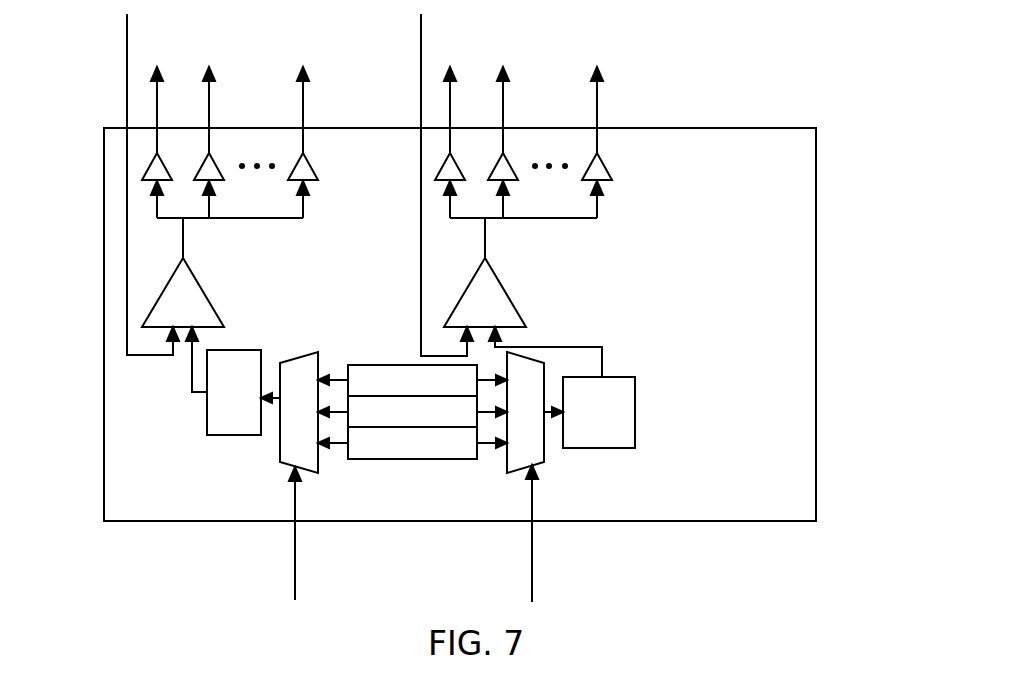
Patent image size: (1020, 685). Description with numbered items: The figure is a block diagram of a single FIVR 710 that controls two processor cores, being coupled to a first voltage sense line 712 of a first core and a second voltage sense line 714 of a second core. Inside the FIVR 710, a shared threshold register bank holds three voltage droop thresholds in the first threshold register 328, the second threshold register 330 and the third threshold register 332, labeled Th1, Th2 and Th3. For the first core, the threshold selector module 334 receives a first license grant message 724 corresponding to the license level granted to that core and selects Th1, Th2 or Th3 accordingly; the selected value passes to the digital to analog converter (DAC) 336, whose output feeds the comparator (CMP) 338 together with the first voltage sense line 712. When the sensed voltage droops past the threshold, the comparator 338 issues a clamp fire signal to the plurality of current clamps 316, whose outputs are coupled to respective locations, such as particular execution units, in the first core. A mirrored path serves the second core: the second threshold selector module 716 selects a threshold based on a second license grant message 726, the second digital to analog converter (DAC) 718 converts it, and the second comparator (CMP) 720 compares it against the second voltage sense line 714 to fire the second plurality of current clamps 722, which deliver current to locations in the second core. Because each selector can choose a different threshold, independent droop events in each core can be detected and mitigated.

The FIVR 710 is at (816, 130).
The first voltage sense line 712 is at (127, 40).
The second voltage sense line 714 is at (421, 43).
The current clamps 316 is at (336, 160).
The second plurality of current clamps 722 is at (629, 160).
The comparator (CMP) 338 is at (197, 278).
The second comparator (CMP) 720 is at (500, 278).
The digital to analog converter (DAC) 336 is at (230, 437).
The second digital to analog converter (DAC) 718 is at (612, 448).
The threshold selector module 334 is at (315, 470).
The second threshold selector module 716 is at (538, 453).
The second threshold register 330 is at (367, 407).
The first threshold register 328 is at (357, 370).
The third threshold register 332 is at (465, 453).
The first license grant message 724 is at (295, 571).
The second license grant message 726 is at (532, 564).